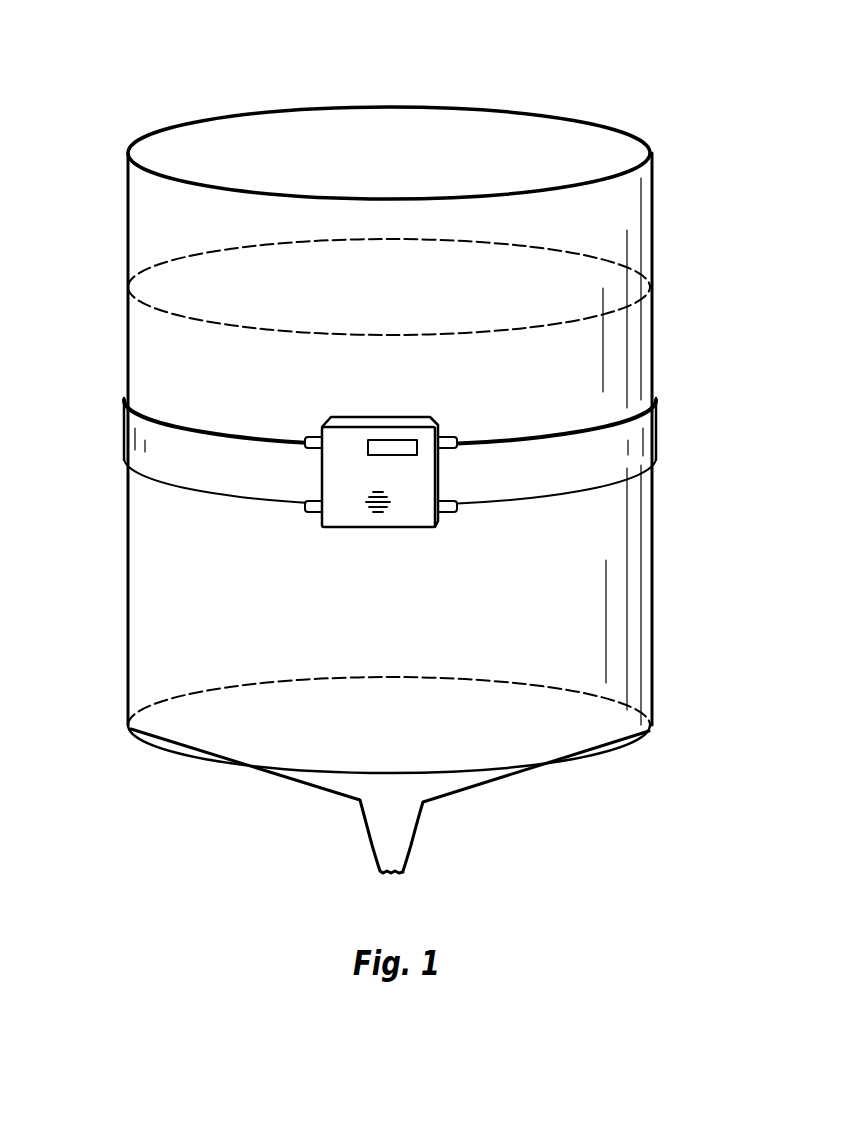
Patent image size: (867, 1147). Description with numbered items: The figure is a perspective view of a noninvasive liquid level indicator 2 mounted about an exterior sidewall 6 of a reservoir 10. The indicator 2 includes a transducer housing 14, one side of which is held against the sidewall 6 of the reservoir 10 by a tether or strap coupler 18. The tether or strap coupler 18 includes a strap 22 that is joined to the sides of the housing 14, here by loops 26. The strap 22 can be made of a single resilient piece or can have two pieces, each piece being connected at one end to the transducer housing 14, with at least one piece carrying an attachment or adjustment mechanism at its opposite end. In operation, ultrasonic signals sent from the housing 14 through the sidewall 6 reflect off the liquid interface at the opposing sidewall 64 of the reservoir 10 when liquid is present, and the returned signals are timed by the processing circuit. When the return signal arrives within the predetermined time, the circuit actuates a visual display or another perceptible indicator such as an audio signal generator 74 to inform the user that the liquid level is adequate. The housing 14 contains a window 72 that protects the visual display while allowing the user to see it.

The noninvasive liquid level indicator 2 is at (352, 410).
The exterior sidewall 6 is at (333, 198).
The reservoir 10 is at (666, 208).
The transducer housing 14 is at (397, 417).
The tether or strap coupler 18 is at (175, 419).
The strap 22 is at (247, 482).
The loops 26 is at (453, 512).
The opposing sidewall 64 is at (423, 107).
The window 72 is at (417, 440).
The audio signal generator 74 is at (365, 502).